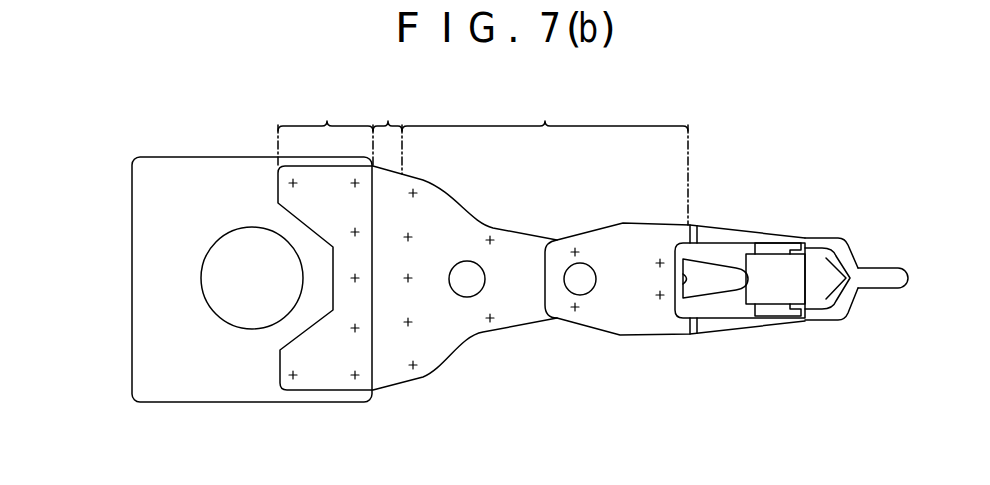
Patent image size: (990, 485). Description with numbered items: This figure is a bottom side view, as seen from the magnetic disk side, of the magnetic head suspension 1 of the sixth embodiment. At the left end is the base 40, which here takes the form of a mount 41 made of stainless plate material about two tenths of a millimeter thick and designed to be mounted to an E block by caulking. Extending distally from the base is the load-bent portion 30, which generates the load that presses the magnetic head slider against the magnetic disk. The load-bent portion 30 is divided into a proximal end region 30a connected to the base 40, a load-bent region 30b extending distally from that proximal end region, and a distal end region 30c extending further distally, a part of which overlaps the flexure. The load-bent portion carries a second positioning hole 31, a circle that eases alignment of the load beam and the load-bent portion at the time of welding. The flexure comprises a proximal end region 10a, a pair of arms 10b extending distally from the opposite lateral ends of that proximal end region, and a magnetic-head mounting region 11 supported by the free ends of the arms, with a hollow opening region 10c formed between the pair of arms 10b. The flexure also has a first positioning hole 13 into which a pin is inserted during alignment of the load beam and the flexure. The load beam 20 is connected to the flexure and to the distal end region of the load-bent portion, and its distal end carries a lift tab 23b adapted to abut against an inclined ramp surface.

The magnetic head suspension 1 is at (798, 183).
The proximal end region 10a is at (623, 280).
The arms 10b is at (710, 240).
The hollow opening region 10c is at (728, 252).
The magnetic-head mounting region 11 is at (822, 280).
The first positioning hole 13 is at (583, 280).
The load beam 20 is at (872, 302).
The lift tab 23b is at (897, 272).
The load-bent portion 30 is at (453, 372).
The proximal end region 30a is at (325, 130).
The load-bent region 30b is at (387, 130).
The distal end region 30c is at (545, 159).
The second positioning hole 31 is at (468, 288).
The base 40 is at (188, 142).
The mount 41 is at (252, 279).